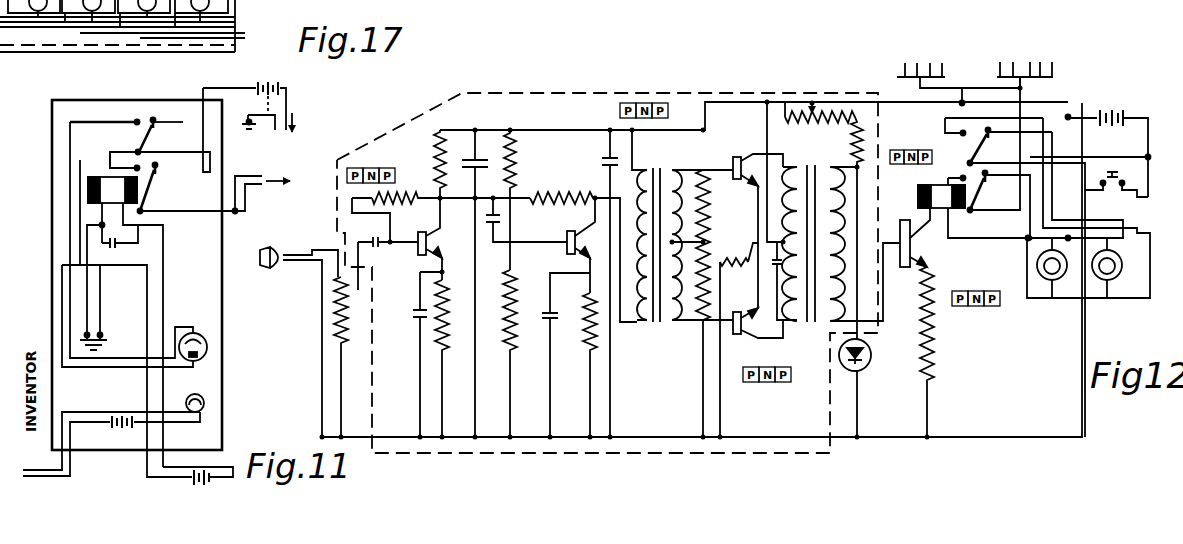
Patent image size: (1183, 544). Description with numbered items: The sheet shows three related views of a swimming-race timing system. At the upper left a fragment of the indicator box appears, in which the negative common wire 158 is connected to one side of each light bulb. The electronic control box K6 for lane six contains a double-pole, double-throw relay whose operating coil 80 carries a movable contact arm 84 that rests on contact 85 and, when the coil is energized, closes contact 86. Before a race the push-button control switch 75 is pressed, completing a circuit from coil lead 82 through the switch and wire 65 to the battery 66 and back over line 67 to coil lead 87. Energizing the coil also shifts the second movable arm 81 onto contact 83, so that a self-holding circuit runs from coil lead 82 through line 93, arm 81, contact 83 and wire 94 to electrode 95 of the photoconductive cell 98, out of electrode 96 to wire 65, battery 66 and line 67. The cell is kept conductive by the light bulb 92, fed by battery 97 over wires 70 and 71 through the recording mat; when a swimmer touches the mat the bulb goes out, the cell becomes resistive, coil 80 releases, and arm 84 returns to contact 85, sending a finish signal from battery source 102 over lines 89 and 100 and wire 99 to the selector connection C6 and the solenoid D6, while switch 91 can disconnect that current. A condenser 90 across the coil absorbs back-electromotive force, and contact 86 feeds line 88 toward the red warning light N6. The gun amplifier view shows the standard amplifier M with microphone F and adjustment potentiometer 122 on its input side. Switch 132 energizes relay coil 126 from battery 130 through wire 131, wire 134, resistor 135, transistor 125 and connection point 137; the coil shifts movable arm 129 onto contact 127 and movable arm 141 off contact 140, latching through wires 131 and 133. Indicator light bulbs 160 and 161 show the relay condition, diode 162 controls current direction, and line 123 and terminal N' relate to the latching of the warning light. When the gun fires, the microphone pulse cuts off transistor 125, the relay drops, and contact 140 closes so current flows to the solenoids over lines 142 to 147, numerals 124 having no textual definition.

In FIG. 17, the negative common wire 158 is at (247, 27).
In FIG. 11, the electronic control box K6 is at (52, 101).
In FIG. 11, the second movable arm 81 is at (137, 152).
In FIG. 11, the contact 83 is at (141, 120).
In FIG. 11, the contact 86 is at (136, 167).
In FIG. 11, the wire 94 is at (70, 158).
In FIG. 11, the line 93 is at (80, 182).
In FIG. 11, the operating coil 80 is at (88, 200).
In FIG. 11, the coil lead 82 is at (97, 219).
In FIG. 11, the contact 85 is at (156, 181).
In FIG. 11, the movable contact arm 84 is at (174, 192).
In FIG. 11, the line 88 is at (201, 211).
In FIG. 11, the coil lead 87 is at (125, 220).
In FIG. 11, the condenser 90 is at (124, 247).
In FIG. 11, the line 67 is at (163, 293).
In FIG. 11, the wire 65 is at (147, 313).
In FIG. 11, the push-button control switch 75 is at (80, 344).
In FIG. 11, the electrode 95 is at (205, 337).
In FIG. 11, the photoconductive cell 98 is at (208, 347).
In FIG. 11, the electrode 96 is at (197, 364).
In FIG. 11, the light bulb 92 is at (205, 403).
In FIG. 11, the wire 71 is at (69, 411).
In FIG. 11, the wire 70 is at (90, 419).
In FIG. 11, the battery 97 is at (112, 437).
In FIG. 11, the battery 66 is at (217, 470).
In FIG. 11, the battery source 102 is at (243, 70).
In FIG. 11, the switch 91 is at (256, 100).
In FIG. 11, the wire 99 is at (267, 129).
In FIG. 11, the line 100 is at (287, 103).
In FIG. 11, the line 89 is at (329, 84).
In FIG. 11, the selector connection C6 is at (342, 81).
In FIG. 11, the solenoid D6 is at (303, 131).
In FIG. 11, the red warning light N6 is at (288, 181).
In FIG. 12, the red warning light N6 is at (900, 72).
In FIG. 12, the warning light terminal N' is at (944, 53).
In FIG. 12, the amplifier M is at (641, 92).
In FIG. 12, the microphone F is at (281, 242).
In FIG. 12, the potentiometer 122 is at (348, 318).
In FIG. 12, the line 123 is at (964, 68).
In FIG. 12, the terminal strip 124 is at (945, 63).
In FIG. 12, the transistor 125 is at (914, 250).
In FIG. 12, the relay coil 126 is at (915, 190).
In FIG. 12, the contact 127 is at (945, 126).
In FIG. 12, the movable arm 129 is at (963, 150).
In FIG. 12, the battery 130 is at (1110, 108).
In FIG. 12, the wire 131 is at (1135, 117).
In FIG. 12, the switch 132 is at (1130, 175).
In FIG. 12, the wire 133 is at (1128, 237).
In FIG. 12, the wire 134 is at (1086, 324).
In FIG. 12, the resistor 135 is at (937, 333).
In FIG. 12, the connection point 137 is at (948, 232).
In FIG. 12, the contact 140 is at (977, 178).
In FIG. 12, the movable arm 141 is at (978, 194).
In FIG. 12, the line 142 is at (1052, 60).
In FIG. 12, the line 147 is at (1000, 56).
In FIG. 12, the indicator light bulb 160 is at (1122, 270).
In FIG. 12, the indicator light bulb 161 is at (1032, 302).
In FIG. 12, the diode 162 is at (866, 367).